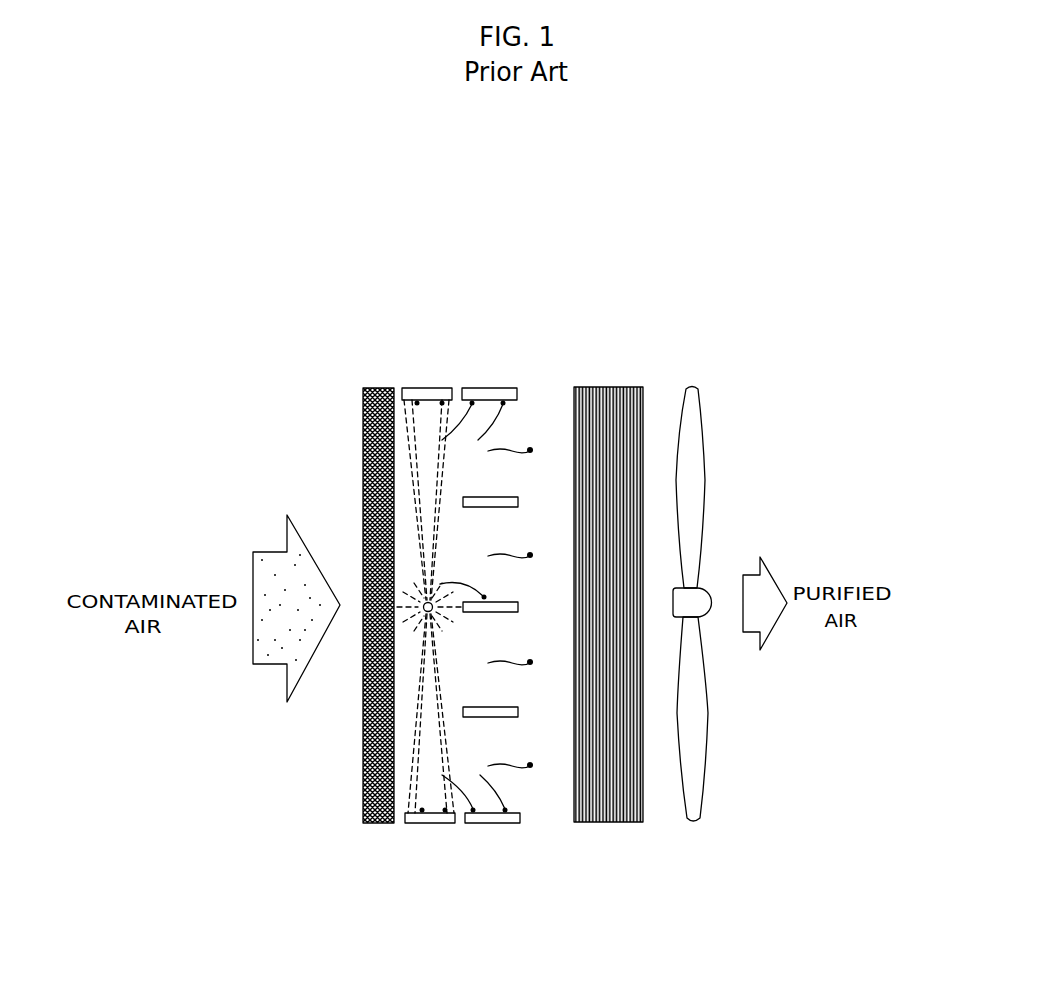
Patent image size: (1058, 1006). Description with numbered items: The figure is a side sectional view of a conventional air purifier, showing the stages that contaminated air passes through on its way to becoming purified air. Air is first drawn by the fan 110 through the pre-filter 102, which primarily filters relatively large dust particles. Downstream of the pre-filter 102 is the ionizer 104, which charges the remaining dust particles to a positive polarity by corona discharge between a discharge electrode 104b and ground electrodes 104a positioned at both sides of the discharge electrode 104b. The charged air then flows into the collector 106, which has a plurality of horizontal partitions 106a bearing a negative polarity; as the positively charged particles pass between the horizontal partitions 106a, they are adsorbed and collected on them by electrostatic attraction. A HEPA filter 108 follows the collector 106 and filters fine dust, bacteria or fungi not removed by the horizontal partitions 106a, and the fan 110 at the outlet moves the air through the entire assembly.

The pre-filter 102 is at (371, 388).
The ionizer 104 is at (450, 549).
The ground electrodes 104a is at (430, 392).
The discharge electrode 104b is at (440, 584).
The collector 106 is at (500, 552).
The horizontal partitions 106a is at (486, 372).
The HEPA filter 108 is at (607, 388).
The fan 110 is at (690, 388).